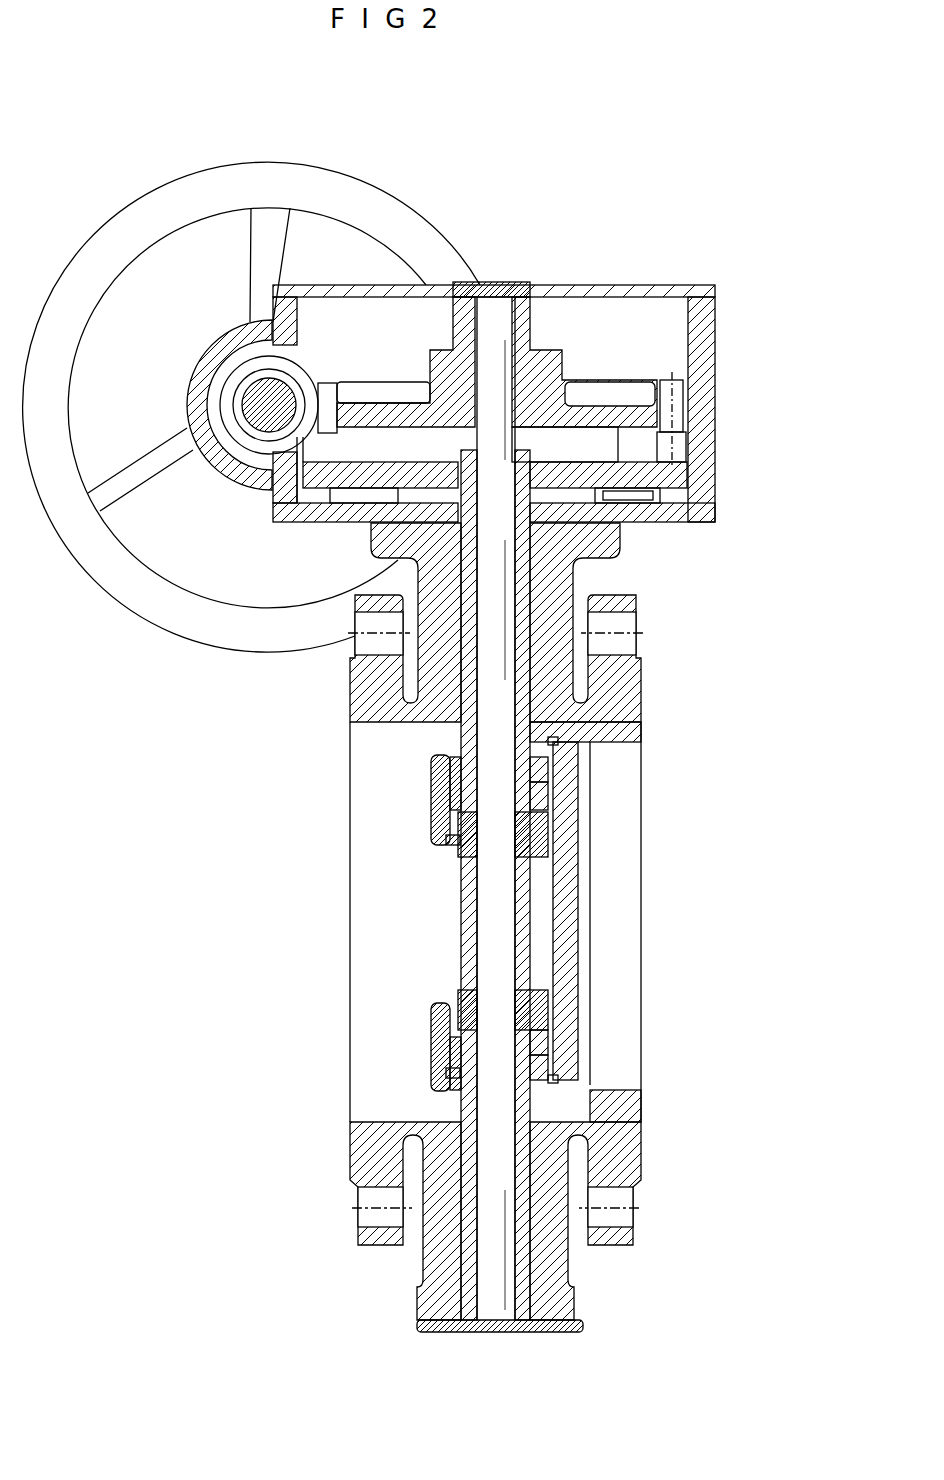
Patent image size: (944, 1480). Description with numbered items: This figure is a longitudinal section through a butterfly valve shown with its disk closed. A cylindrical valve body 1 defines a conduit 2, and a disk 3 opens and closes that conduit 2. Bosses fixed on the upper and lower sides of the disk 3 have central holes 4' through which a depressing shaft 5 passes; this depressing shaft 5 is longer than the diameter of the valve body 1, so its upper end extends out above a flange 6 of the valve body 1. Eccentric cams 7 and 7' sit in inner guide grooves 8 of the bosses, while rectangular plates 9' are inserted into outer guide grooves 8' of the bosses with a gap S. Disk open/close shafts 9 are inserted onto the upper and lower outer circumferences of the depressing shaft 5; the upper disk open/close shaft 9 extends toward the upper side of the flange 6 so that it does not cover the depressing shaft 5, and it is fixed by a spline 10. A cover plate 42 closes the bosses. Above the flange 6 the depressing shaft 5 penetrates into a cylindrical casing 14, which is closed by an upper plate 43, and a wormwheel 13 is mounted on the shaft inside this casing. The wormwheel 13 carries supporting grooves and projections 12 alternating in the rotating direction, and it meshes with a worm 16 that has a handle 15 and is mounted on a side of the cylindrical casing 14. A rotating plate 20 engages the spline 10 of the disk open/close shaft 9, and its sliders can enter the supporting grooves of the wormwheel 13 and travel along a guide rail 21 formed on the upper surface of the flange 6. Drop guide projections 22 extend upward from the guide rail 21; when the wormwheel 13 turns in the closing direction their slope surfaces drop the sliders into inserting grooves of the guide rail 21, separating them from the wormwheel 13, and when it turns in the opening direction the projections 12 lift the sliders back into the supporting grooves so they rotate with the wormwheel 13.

The valve body 1 is at (630, 1152).
The conduit 2 is at (623, 945).
The disk 3 is at (567, 888).
The central holes 4' is at (417, 973).
The depressing shaft 5 is at (500, 347).
The flange 6 is at (715, 500).
The eccentric cam 7 is at (451, 847).
The eccentric cam 7' is at (433, 1022).
The inner guide grooves 8 is at (469, 921).
The outer guide grooves 8' is at (625, 890).
The disk open/close shafts 9 is at (420, 885).
The rectangular plates 9' is at (616, 918).
The spline 10 is at (600, 508).
The projections 12 is at (630, 452).
The wormwheel 13 is at (585, 385).
The cylindrical casing 14 is at (718, 318).
The handle 15 is at (400, 212).
The worm 16 is at (250, 392).
The rotating plate 20 is at (385, 505).
The guide rail 21 is at (690, 483).
The drop guide projection 22 is at (680, 445).
The cover plate 42 is at (440, 775).
The upper plate 43 is at (660, 285).
The gap S is at (552, 775).